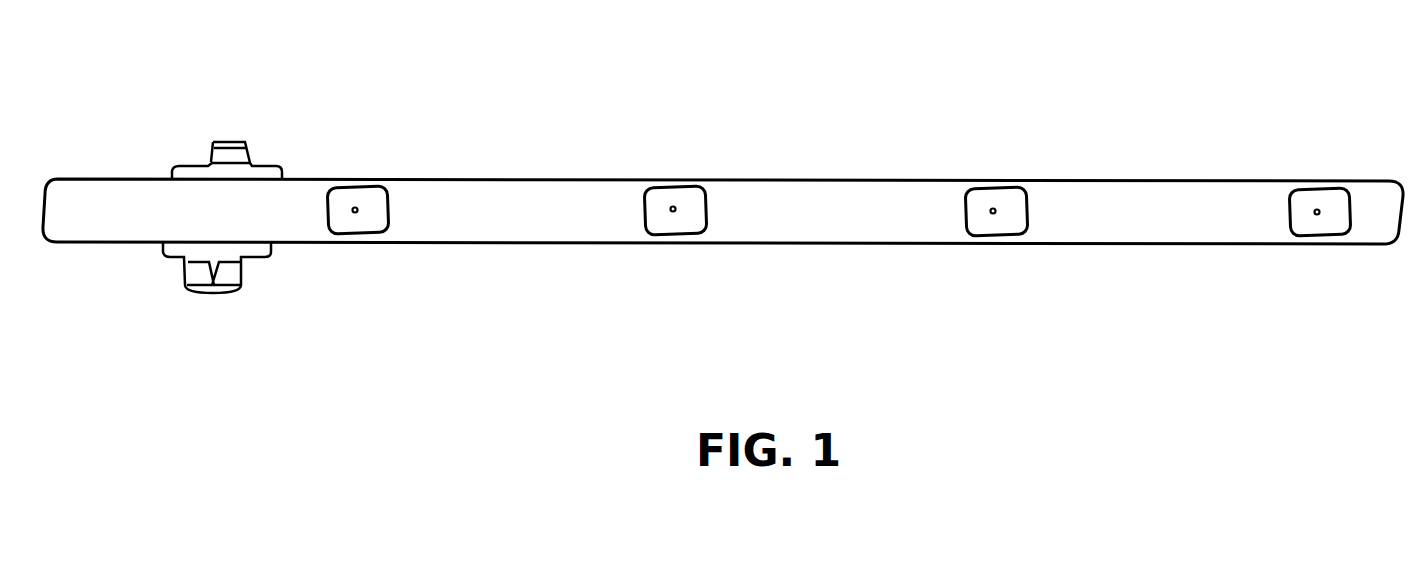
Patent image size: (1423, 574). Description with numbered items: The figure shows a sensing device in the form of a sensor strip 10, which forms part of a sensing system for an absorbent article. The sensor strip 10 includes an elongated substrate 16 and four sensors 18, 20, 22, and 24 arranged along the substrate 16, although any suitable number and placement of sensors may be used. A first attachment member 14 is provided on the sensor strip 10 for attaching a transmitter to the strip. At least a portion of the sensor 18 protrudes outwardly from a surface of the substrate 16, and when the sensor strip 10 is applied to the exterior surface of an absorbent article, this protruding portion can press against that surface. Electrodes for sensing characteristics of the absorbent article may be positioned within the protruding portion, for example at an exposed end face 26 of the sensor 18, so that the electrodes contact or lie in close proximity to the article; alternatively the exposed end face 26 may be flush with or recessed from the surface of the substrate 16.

The sensor strip 10 is at (912, 104).
The first attachment member 14 is at (270, 156).
The substrate 16 is at (547, 174).
The sensor 18 is at (405, 225).
The sensor 20 is at (722, 225).
The sensor 22 is at (1042, 227).
The sensor 24 is at (1365, 227).
The exposed end face 26 is at (374, 195).